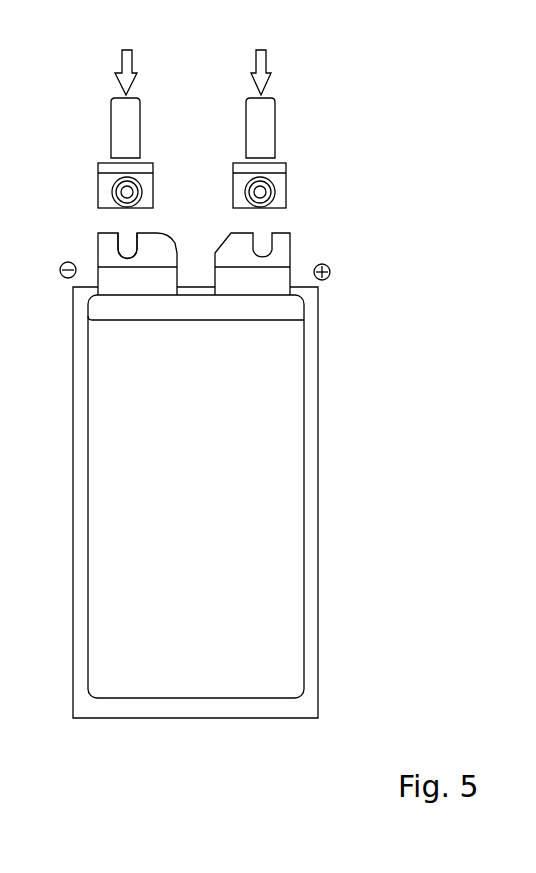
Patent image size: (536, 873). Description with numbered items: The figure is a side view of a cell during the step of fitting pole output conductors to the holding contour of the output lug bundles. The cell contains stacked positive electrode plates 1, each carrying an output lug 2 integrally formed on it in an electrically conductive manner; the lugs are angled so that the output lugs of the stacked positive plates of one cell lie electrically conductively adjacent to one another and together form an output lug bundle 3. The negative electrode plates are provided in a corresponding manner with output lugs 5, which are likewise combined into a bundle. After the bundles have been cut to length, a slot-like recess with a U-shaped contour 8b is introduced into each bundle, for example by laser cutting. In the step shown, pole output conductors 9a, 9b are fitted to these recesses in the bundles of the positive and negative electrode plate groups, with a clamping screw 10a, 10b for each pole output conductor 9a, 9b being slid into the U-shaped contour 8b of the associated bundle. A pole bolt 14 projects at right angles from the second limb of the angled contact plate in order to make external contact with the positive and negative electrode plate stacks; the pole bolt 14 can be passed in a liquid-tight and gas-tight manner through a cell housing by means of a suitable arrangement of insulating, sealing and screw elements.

The positive electrode plate 1 is at (258, 638).
The output lug 2 is at (242, 307).
The output lug bundle 3 is at (280, 253).
The output lug 5 is at (108, 277).
The U-shaped contour 8b is at (127, 248).
The pole output conductor 9a is at (308, 110).
The pole output conductor 9b is at (78, 123).
The clamping screw 10a is at (272, 185).
The clamping screw 10b is at (112, 180).
The pole bolt 14 is at (245, 128).